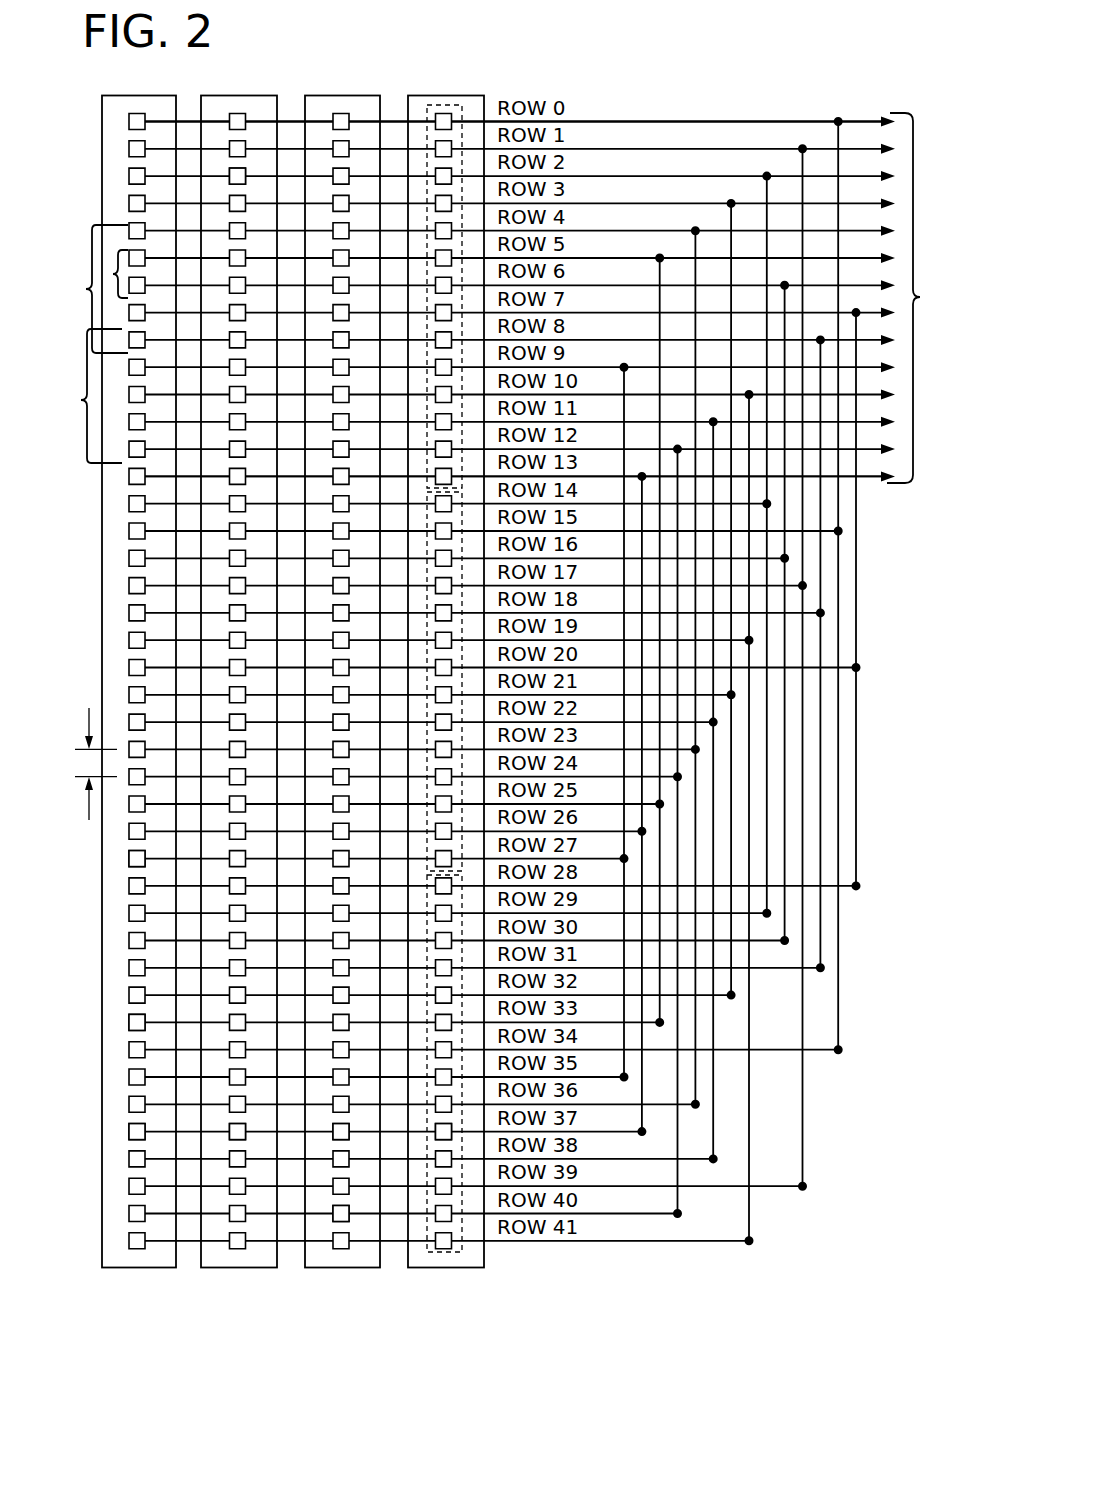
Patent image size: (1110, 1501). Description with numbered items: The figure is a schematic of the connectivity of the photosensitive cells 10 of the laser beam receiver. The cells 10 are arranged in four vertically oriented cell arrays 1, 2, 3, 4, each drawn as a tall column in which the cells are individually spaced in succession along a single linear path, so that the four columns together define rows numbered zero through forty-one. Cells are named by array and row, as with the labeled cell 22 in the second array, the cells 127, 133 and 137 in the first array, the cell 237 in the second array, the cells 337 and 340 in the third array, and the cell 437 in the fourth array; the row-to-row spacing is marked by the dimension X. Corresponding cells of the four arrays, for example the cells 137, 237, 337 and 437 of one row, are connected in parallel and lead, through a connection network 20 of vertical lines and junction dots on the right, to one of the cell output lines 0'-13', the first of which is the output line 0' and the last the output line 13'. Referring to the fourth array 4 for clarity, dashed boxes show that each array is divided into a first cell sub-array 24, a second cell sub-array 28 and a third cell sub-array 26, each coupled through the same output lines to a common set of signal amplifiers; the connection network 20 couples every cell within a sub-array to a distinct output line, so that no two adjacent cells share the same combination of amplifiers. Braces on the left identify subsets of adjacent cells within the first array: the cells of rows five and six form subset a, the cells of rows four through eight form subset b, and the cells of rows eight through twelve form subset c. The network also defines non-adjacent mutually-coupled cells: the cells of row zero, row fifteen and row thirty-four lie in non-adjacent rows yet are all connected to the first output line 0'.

The photosensitive cell 10 is at (123, 1275).
The first cell array 1 is at (152, 1268).
The second cell array 2 is at (260, 1268).
The third cell array 3 is at (353, 1268).
The fourth cell array 4 is at (460, 1268).
The connection network 20 is at (787, 1247).
The cell 22 is at (239, 176).
The first cell sub-array 24 is at (443, 106).
The third cell sub-array 26 is at (463, 1249).
The second cell sub-array 28 is at (430, 680).
The cell 127 is at (130, 859).
The cell 133 is at (130, 1022).
The cell 137 is at (130, 1132).
The cell 237 is at (237, 1133).
The cell 337 is at (340, 1133).
The cell 340 is at (345, 1215).
The cell 437 is at (443, 1133).
The first cell output line 0' is at (513, 81).
The last cell output line 13' is at (528, 519).
The cell output lines 0'-13' is at (532, 640).
The subset a of adjacent cells a is at (116, 274).
The subset b of adjacent cells b is at (94, 289).
The subset c of adjacent cells c is at (88, 396).
The row pitch dimension X is at (96, 764).